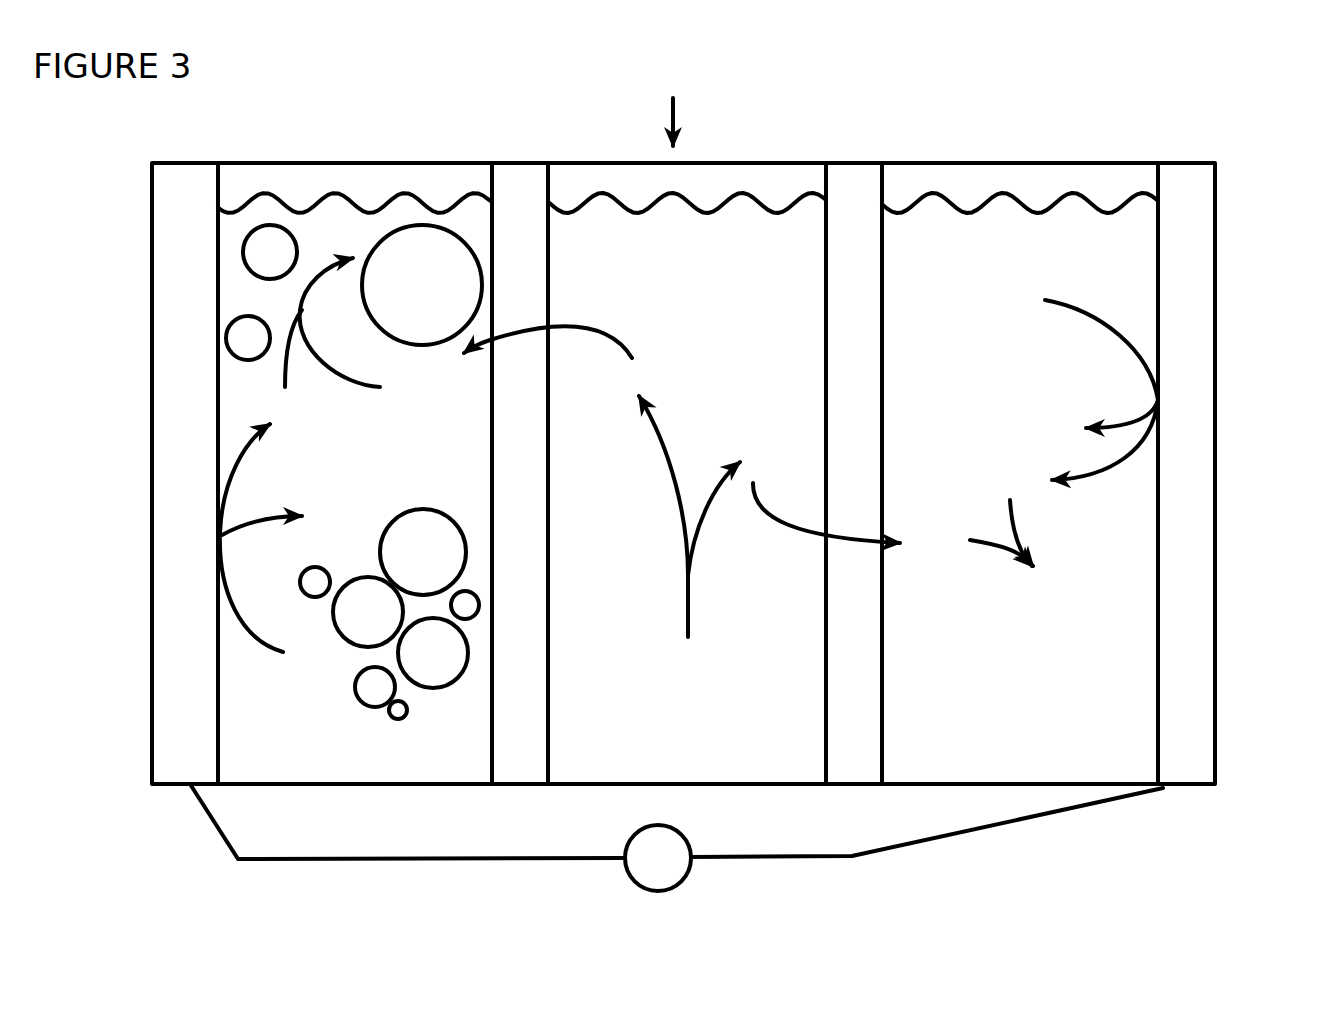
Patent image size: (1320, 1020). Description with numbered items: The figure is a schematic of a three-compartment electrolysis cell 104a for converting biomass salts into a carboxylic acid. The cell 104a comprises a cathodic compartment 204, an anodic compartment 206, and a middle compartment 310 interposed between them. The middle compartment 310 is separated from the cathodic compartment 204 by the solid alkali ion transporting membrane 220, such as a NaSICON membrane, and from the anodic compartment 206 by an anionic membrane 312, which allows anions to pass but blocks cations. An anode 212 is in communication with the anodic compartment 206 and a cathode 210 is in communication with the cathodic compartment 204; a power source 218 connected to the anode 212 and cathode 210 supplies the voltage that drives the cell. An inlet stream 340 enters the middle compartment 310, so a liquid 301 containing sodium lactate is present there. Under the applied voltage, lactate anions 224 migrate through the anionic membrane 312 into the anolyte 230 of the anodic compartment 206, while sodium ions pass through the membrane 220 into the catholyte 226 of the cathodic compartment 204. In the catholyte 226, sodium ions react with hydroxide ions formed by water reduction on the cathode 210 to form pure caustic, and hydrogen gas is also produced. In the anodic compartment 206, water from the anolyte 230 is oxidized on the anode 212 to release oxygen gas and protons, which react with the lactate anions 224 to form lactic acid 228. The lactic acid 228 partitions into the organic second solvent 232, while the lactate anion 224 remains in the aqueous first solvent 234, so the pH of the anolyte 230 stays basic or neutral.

The electrolysis cell 104a is at (1170, 151).
The cathodic compartment 204 is at (974, 695).
The anodic compartment 206 is at (279, 738).
The cathode 210 is at (1216, 613).
The anode 212 is at (152, 276).
The power source 218 is at (660, 891).
The solid alkali ion transporting membrane 220 is at (870, 168).
The lactate anions 224 is at (240, 357).
The catholyte 226 is at (1003, 196).
The lactic acid 228 is at (401, 318).
The anolyte 230 is at (333, 197).
The second solvent 232 is at (273, 226).
The first solvent 234 is at (389, 445).
The liquid 301 is at (758, 195).
The middle compartment 310 is at (689, 318).
The anionic membrane 312 is at (542, 162).
The inlet stream 340 is at (683, 109).